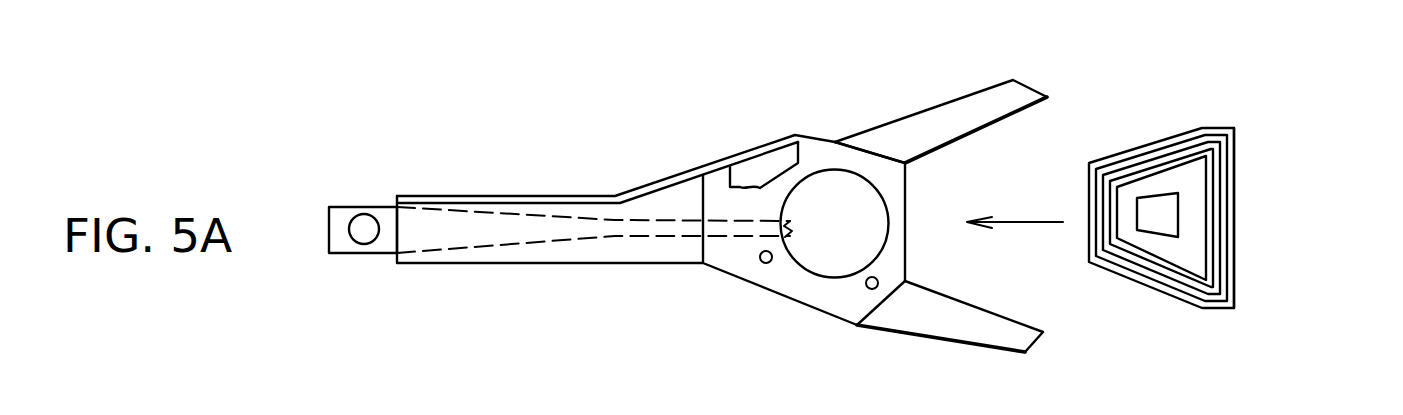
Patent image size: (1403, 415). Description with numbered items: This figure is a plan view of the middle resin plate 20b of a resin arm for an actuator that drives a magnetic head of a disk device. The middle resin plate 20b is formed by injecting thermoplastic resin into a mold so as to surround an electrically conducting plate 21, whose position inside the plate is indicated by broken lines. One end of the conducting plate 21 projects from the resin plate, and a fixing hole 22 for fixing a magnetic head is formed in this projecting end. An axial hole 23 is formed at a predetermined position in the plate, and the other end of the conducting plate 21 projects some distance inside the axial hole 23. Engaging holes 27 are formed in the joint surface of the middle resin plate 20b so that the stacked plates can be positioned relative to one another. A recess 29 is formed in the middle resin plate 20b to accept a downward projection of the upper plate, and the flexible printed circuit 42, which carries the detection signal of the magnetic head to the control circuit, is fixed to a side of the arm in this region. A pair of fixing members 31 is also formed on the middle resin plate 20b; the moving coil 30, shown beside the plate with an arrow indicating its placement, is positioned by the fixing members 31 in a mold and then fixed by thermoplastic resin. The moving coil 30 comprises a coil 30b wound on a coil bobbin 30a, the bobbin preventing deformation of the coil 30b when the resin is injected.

The middle resin plate 20b is at (815, 155).
The electrically conducting plate 21 is at (483, 234).
The fixing hole 22 is at (365, 235).
The axial hole 23 is at (876, 206).
The engaging hole 27 is at (760, 260).
The recess 29 is at (772, 167).
The moving coil 30 is at (1220, 208).
The coil bobbin 30a is at (1202, 263).
The coil 30b is at (1227, 178).
The fixing member 31 is at (1018, 100).
The flexible printed circuit 42 is at (657, 181).